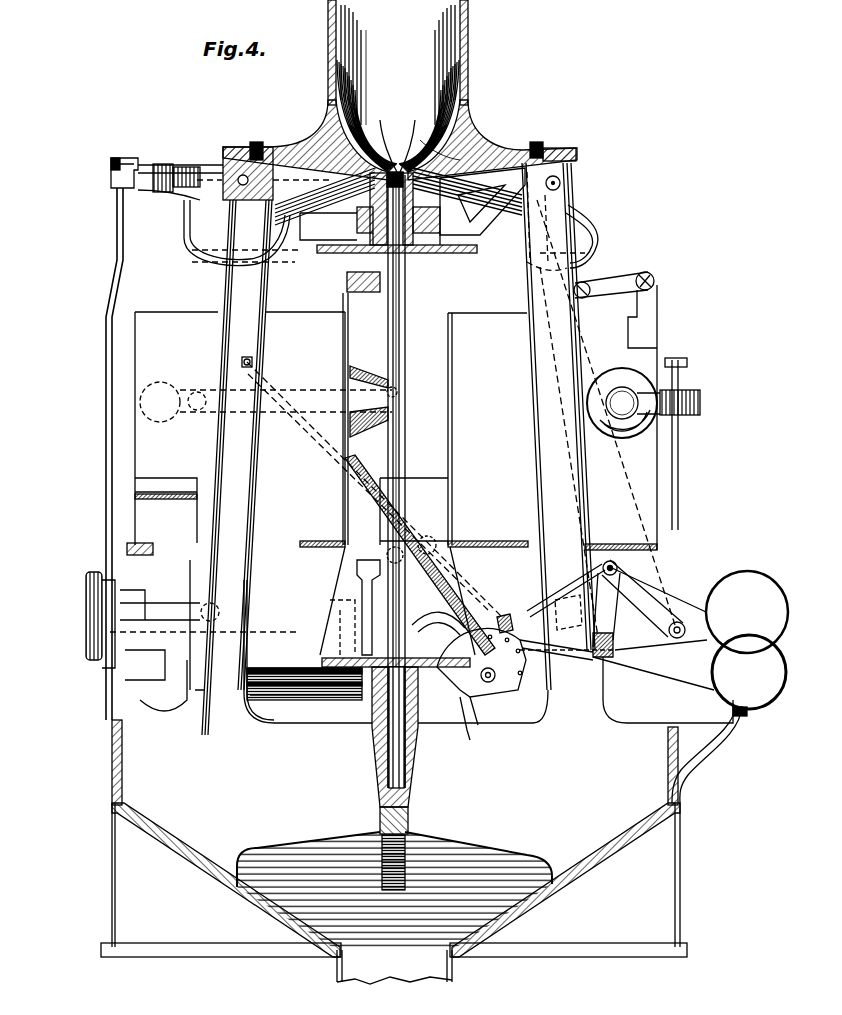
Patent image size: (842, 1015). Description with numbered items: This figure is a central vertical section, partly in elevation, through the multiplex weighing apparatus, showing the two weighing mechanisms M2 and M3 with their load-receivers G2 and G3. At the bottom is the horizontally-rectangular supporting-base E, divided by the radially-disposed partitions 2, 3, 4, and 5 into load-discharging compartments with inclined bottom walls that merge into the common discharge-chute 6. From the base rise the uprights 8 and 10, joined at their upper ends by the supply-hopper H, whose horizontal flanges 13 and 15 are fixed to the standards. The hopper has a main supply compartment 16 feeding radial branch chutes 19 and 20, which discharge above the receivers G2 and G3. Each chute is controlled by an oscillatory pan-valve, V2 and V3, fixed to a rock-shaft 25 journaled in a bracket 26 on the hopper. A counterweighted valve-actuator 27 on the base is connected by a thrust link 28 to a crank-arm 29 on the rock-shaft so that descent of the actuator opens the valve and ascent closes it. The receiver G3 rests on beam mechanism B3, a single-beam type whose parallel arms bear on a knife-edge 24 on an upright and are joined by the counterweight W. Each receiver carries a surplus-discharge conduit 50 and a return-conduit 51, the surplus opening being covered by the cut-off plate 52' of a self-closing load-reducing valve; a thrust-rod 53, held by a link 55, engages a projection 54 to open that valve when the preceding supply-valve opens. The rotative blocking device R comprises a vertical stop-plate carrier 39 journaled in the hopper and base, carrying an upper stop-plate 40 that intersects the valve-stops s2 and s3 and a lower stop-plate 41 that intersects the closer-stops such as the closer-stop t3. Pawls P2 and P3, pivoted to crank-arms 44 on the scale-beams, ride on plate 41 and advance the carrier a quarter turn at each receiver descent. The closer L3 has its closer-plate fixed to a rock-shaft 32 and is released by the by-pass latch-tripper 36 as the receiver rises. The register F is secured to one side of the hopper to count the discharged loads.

The supply-hopper H is at (468, 66).
The main supply compartment 16 is at (391, 77).
The branch conduit 19 is at (380, 127).
The branch conduit 20 is at (440, 148).
The horizontal flange 15 is at (565, 152).
The horizontal flange 13 is at (240, 147).
The crank-arm 29 is at (133, 181).
The bracket 26 is at (168, 160).
The rock-shaft 25 is at (196, 163).
The oscillatory valve V2 is at (200, 262).
The oscillatory valve V3 is at (598, 250).
The thrust member 28 is at (105, 388).
The upright 8 is at (288, 451).
The upright 10 is at (532, 418).
The valve-stop s2 is at (357, 213).
The register F is at (358, 231).
The stop-plate 40 is at (333, 254).
The valve-stop s3 is at (482, 206).
The rotative blocking device R is at (411, 481).
The stop-plate carrier 39 is at (402, 334).
The load-receiver G2 is at (176, 428).
The weighing mechanism M2 is at (305, 483).
The load-receiver G3 is at (488, 430).
The weighing mechanism M3 is at (475, 568).
The return-conduit 51 is at (291, 511).
The surplus-discharge conduit 50 is at (365, 377).
The cut-off plate 52' is at (623, 403).
The projection 54 is at (253, 360).
The thrust-rod 53 is at (321, 490).
The link 55 is at (402, 560).
The valve-actuator 27 is at (86, 600).
The counterweight W is at (290, 702).
The beam mechanism B3 is at (752, 702).
The crank-arm 44 is at (612, 605).
The knife-edge 24 is at (626, 678).
The pawl P2 is at (357, 570).
The pawl P3 is at (504, 616).
The by-pass latch-tripper 36 is at (438, 625).
The stop-plate 41 is at (396, 652).
The closer L3 is at (515, 668).
The closer-stop t3 is at (470, 731).
The rock-shaft 32 is at (262, 688).
The supporting-base E is at (112, 873).
The discharge-chute 6 is at (394, 978).
The partition 2 is at (409, 826).
The partition 4 is at (380, 856).
The partition 3 is at (420, 880).
The partition 5 is at (478, 848).